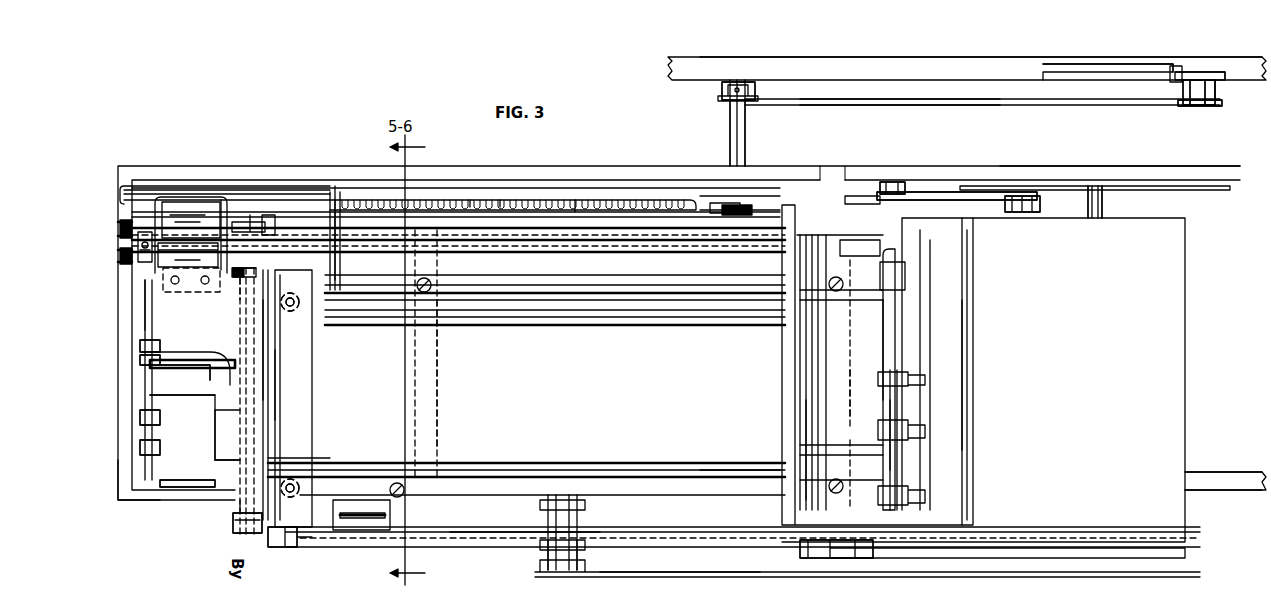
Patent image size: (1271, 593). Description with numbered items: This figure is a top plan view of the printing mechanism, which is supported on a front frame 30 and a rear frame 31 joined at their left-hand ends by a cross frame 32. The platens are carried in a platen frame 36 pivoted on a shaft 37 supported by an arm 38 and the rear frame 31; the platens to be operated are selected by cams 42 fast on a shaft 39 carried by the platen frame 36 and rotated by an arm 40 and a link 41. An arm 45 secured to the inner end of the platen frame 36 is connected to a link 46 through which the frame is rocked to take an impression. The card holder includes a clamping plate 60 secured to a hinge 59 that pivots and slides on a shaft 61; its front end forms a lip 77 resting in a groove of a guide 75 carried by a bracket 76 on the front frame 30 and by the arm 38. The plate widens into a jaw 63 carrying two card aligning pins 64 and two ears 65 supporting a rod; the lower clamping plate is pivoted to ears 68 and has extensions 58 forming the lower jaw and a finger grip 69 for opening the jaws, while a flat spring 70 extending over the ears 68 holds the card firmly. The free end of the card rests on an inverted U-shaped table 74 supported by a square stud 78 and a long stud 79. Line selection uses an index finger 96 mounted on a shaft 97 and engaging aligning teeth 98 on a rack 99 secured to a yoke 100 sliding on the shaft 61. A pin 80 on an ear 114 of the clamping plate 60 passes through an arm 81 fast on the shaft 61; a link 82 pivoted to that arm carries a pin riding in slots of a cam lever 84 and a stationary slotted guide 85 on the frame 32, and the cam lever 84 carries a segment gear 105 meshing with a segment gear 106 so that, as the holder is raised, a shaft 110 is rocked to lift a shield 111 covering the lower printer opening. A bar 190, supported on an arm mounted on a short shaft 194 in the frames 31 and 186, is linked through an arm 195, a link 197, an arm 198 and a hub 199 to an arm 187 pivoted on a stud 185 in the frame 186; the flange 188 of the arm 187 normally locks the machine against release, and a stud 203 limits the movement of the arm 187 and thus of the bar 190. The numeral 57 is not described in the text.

The front frame 30 is at (1240, 490).
The rear frame 31 is at (1213, 161).
The cross frame 32 is at (127, 492).
The platen frame 36 is at (948, 398).
The shaft 37 is at (815, 444).
The arm 38 is at (840, 552).
The shaft 39 is at (888, 329).
The arm 40 is at (893, 192).
The link 41 is at (1178, 188).
The cams 42 is at (878, 426).
The arm 45 is at (950, 200).
The link 46 is at (1026, 212).
The base plate 57 is at (238, 504).
The extensions 58 is at (300, 315).
The hinge 59 is at (185, 250).
The clamping plate 60 is at (224, 343).
The shaft 61 is at (515, 251).
The jaw 63 is at (300, 383).
The card aligning pins 64 is at (290, 308).
The ears 65 is at (256, 273).
The ears 68 is at (244, 278).
The finger grip 69 is at (215, 405).
The flat spring 70 is at (256, 368).
The table 74 is at (725, 442).
The guide 75 is at (513, 540).
The bracket 76 is at (370, 523).
The lip 77 is at (283, 540).
The square stud 78 is at (443, 385).
The long stud 79 is at (845, 366).
The pin 80 is at (150, 340).
The arm 81 is at (150, 312).
The link 82 is at (152, 416).
The cam lever 84 is at (155, 448).
The slotted guide 85 is at (150, 476).
The index finger 96 is at (341, 195).
The shaft 97 is at (662, 228).
The aligning teeth 98 is at (502, 198).
The rack 99 is at (284, 188).
The yoke 100 is at (226, 218).
The segment gear 105 is at (235, 456).
The segment gear 106 is at (240, 478).
The shaft 110 is at (576, 547).
The shield 111 is at (666, 574).
The ear 114 is at (152, 356).
The stud 185 is at (1198, 105).
The frame 186 is at (994, 56).
The arm 187 is at (1218, 80).
The flange 188 is at (1190, 72).
The bar 190 is at (578, 210).
The short shaft 194 is at (748, 132).
The arm 195 is at (726, 102).
The link 197 is at (902, 105).
The arm 198 is at (1220, 102).
The hub 199 is at (1195, 88).
The stud 203 is at (1170, 68).